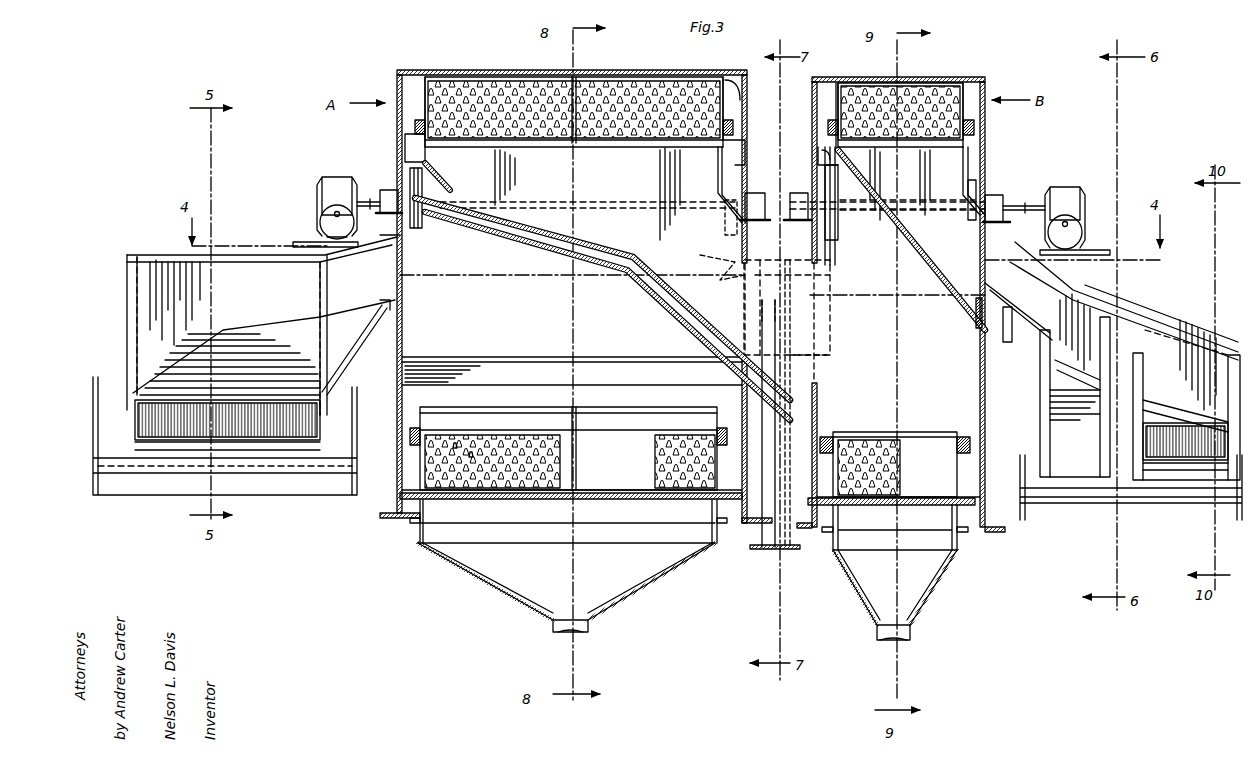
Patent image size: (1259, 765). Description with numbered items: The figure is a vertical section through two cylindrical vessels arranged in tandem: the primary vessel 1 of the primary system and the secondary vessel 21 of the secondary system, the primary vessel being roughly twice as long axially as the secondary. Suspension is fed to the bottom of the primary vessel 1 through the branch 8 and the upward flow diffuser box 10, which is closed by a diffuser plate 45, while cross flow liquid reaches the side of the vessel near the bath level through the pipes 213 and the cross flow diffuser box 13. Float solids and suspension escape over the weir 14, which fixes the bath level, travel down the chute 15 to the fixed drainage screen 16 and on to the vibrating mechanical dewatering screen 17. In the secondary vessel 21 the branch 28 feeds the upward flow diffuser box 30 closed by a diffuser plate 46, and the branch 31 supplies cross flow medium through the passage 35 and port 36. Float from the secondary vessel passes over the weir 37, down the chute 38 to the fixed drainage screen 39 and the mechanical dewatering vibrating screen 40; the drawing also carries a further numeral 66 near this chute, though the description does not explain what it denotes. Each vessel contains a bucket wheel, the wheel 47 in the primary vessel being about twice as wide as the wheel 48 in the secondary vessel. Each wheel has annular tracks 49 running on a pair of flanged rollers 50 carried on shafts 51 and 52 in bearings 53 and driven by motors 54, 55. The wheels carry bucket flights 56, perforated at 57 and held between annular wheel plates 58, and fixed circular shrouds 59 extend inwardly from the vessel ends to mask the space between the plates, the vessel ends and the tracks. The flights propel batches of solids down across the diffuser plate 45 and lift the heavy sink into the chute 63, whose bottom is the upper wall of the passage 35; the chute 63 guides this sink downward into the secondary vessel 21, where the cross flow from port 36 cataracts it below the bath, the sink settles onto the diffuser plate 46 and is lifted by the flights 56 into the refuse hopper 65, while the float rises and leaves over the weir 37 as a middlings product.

The primary vessel 1 is at (603, 72).
The branch 8 is at (553, 626).
The upward flow diffuser box 10 is at (532, 603).
The cross flow diffuser box 13 is at (722, 262).
The weir 14 is at (402, 293).
The chute 15 is at (362, 305).
The fixed drainage screen 16 is at (312, 425).
The vibrating mechanical dewatering screen 17 is at (310, 487).
The secondary vessel 21 is at (982, 76).
The branch 28 is at (912, 633).
The upward flow diffuser box 30 is at (930, 578).
The branch 31 is at (770, 549).
The passage 35 is at (502, 238).
The port 36 is at (450, 190).
The weir 37 is at (975, 306).
The chute 38 is at (1190, 345).
The fixed drainage screen 39 is at (1160, 447).
The mechanical dewatering vibrating screen 40 is at (1022, 468).
The diffuser plate 45 is at (590, 496).
The diffuser plate 46 is at (905, 502).
The bucket wheel 47 is at (722, 78).
The bucket wheel 48 is at (836, 106).
The annular tracks 49 is at (415, 126).
The flanged rollers 50 is at (421, 228).
The shaft 51 is at (370, 198).
The shaft 52 is at (1032, 206).
The bearings 53 is at (392, 190).
The motor 54 is at (338, 178).
The motor 55 is at (1070, 188).
The bucket flights 56 is at (482, 78).
The perforations 57 is at (555, 82).
The annular wheel plates 58 is at (425, 84).
The fixed circular shrouds 59 is at (405, 146).
The chute 63 is at (592, 252).
The refuse hopper 65 is at (915, 233).
The chute floor 66 is at (1060, 373).
The pipes 213 is at (830, 354).